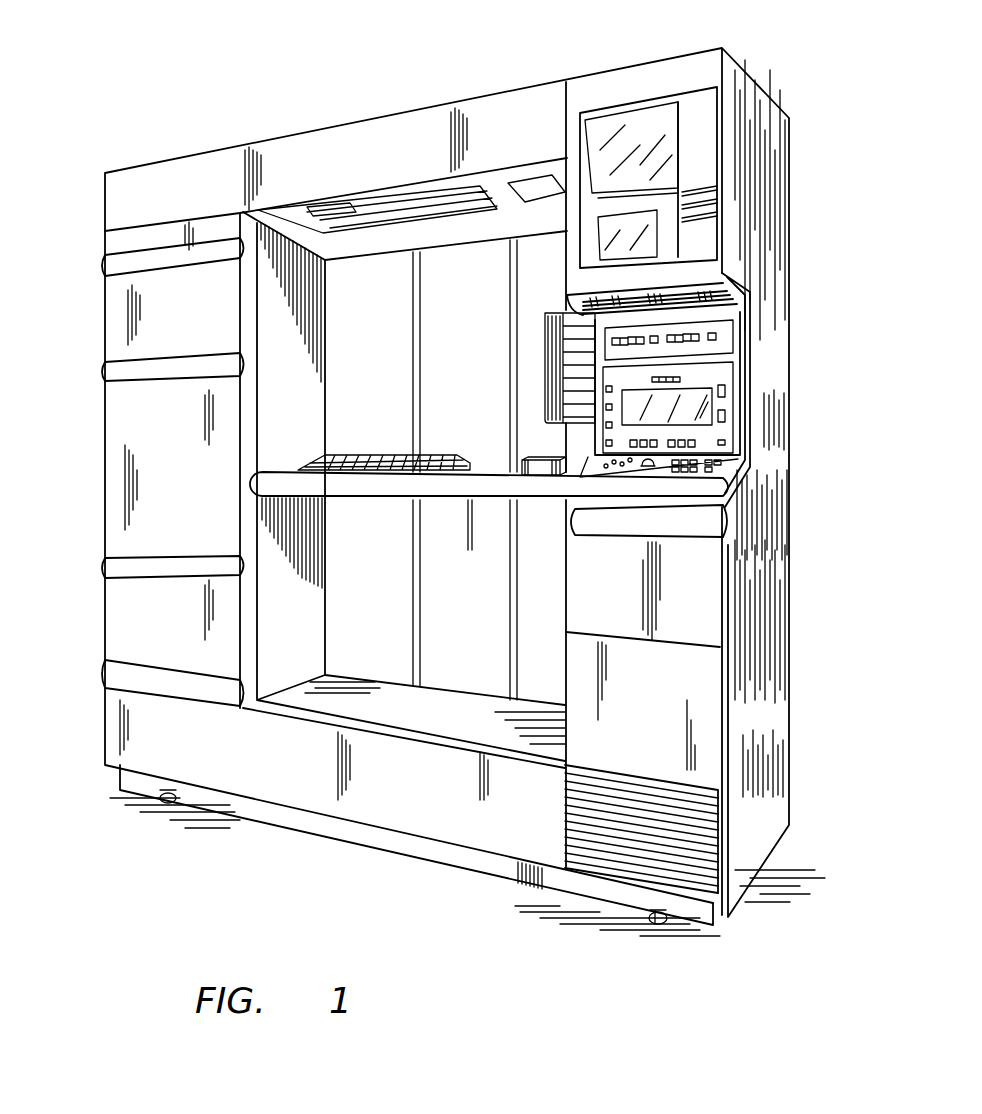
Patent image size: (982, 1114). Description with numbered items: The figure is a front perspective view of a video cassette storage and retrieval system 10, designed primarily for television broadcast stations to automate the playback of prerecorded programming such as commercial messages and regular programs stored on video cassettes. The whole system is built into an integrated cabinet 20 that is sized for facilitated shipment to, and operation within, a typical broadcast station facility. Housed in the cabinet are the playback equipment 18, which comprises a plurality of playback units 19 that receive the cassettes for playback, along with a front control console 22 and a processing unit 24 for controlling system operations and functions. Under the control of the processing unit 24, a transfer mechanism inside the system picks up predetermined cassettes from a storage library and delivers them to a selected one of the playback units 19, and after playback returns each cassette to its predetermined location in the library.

The video cassette storage and retrieval system 10 is at (282, 101).
The playback equipment 18 is at (156, 772).
The playback units 19 is at (113, 407).
The integrated cabinet 20 is at (767, 789).
The front control console 22 is at (700, 455).
The processing unit 24 is at (684, 733).